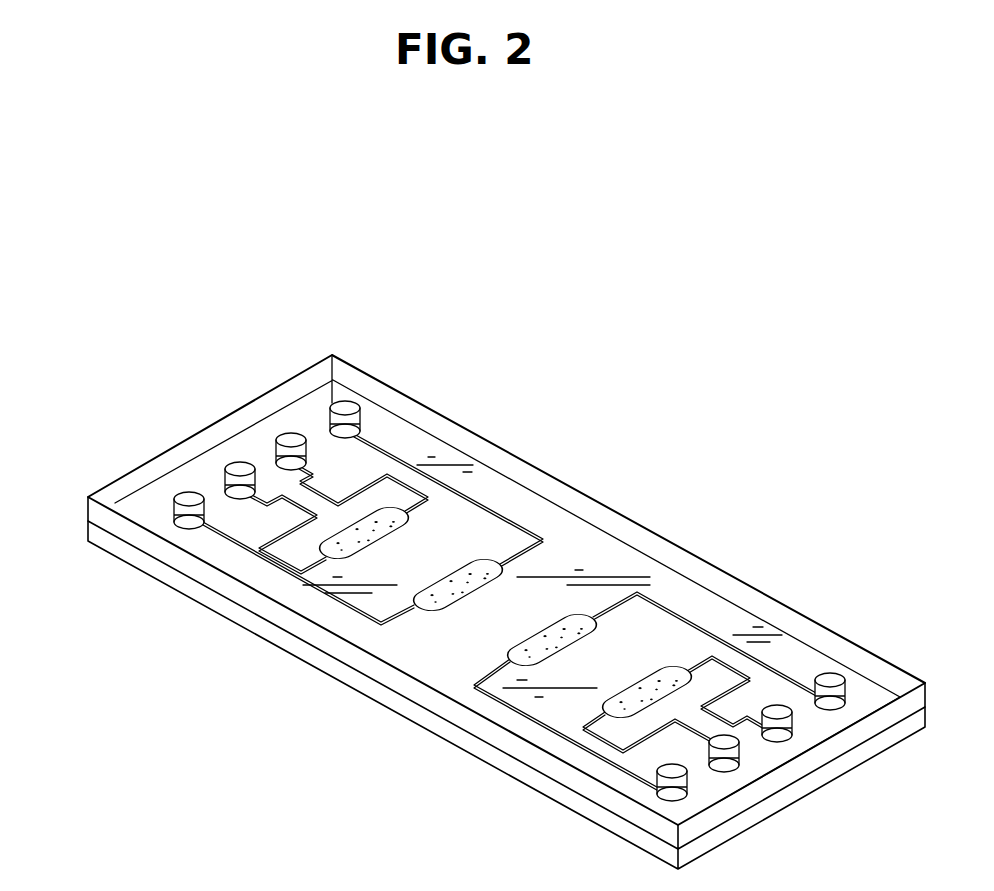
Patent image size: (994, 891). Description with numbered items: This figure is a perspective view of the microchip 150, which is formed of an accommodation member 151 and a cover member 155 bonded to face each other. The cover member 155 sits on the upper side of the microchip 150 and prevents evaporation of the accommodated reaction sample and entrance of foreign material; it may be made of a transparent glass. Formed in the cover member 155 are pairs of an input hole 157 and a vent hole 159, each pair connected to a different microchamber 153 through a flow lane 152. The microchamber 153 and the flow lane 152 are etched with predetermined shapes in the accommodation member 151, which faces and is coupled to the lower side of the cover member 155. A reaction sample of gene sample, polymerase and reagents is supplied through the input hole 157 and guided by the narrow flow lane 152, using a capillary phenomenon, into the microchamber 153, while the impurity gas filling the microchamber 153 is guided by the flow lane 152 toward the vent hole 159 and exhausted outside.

The microchip 150 is at (188, 330).
The accommodation member 151 is at (87, 537).
The flow lane 152 is at (470, 528).
The microchamber 153 is at (502, 567).
The cover member 155 is at (87, 497).
The input hole 157 is at (352, 405).
The vent hole 159 is at (290, 437).